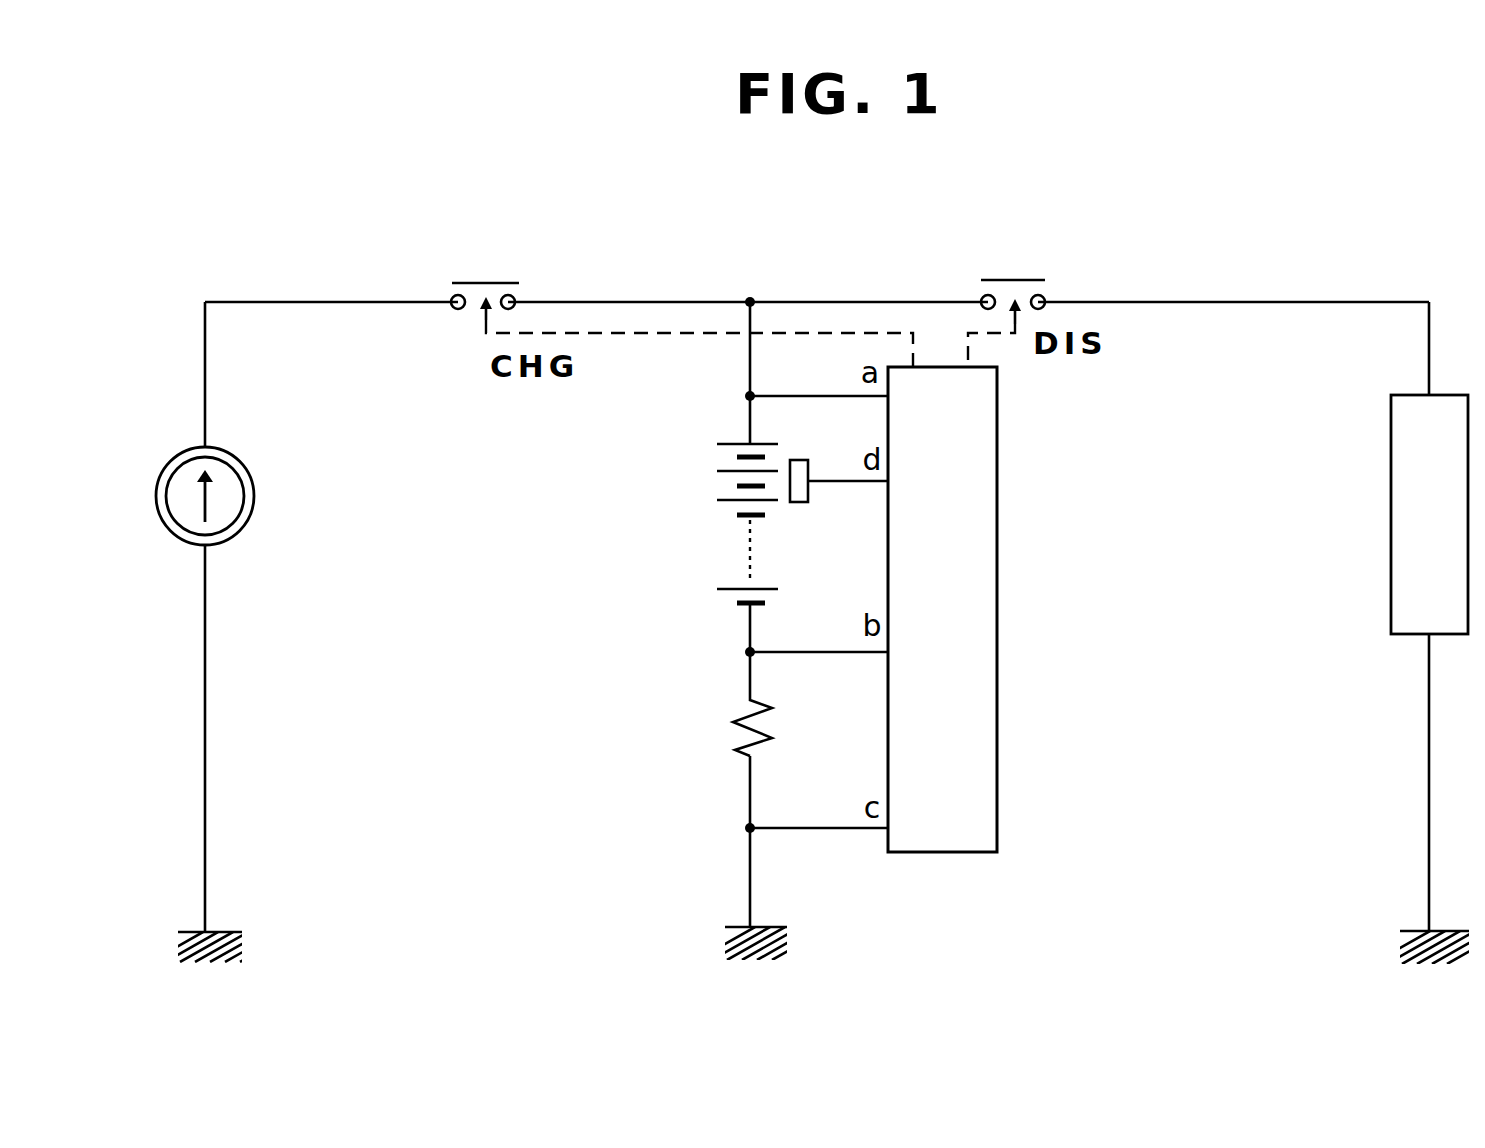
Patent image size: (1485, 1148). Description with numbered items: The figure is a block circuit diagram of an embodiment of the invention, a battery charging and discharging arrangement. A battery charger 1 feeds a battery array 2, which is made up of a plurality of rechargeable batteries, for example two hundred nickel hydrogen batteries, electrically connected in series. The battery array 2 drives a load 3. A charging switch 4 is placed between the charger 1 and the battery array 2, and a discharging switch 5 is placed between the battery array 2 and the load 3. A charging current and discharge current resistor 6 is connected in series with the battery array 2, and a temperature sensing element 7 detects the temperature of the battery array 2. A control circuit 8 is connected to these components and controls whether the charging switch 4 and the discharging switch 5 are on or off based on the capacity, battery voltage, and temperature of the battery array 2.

The battery charger 1 is at (255, 484).
The battery array 2 is at (720, 462).
The load 3 is at (1391, 493).
The charging switch 4 is at (470, 282).
The discharging switch 5 is at (997, 278).
The charging current and discharge current resistor 6 is at (733, 731).
The temperature sensing element 7 is at (800, 505).
The control circuit 8 is at (997, 545).